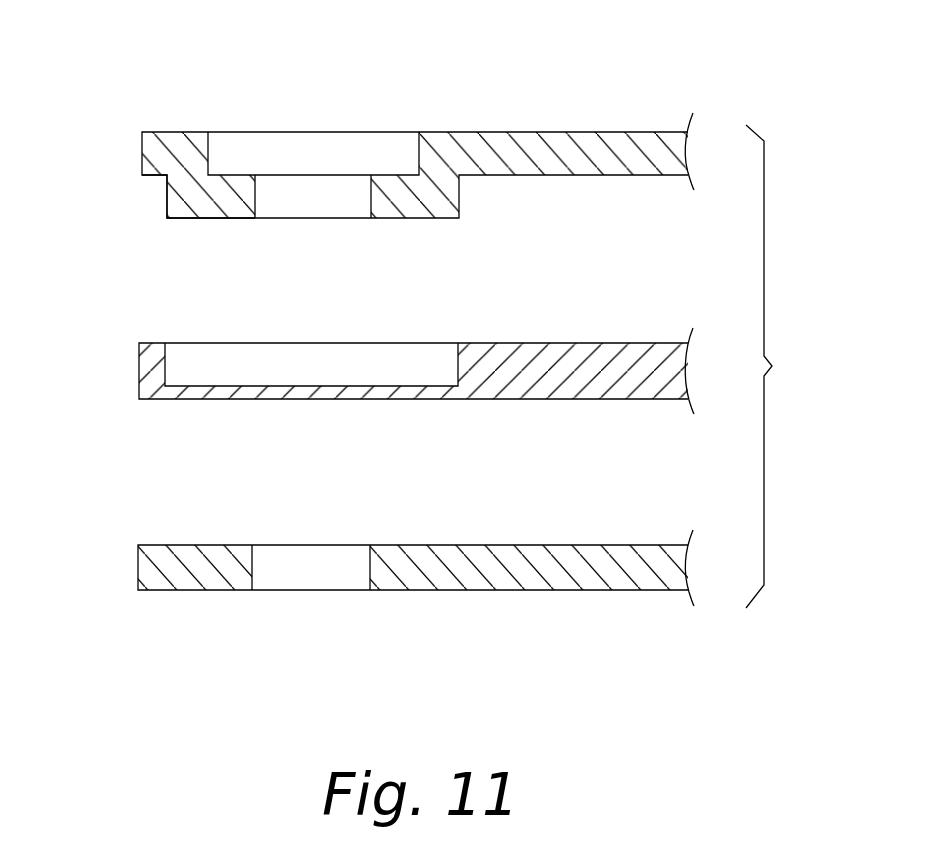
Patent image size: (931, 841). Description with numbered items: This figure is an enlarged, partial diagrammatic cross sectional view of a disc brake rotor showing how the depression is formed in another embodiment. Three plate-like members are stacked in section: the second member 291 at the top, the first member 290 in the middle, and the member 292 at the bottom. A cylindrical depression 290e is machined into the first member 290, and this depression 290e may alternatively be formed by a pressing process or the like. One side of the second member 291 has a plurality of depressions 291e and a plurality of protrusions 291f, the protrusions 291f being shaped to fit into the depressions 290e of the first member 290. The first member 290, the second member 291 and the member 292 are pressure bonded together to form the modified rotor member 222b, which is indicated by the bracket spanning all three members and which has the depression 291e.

The second member 291 is at (500, 132).
The depression 291e is at (208, 143).
The protrusion 291f is at (200, 198).
The first member 290 is at (495, 343).
The depression 290e is at (168, 362).
The member 292 is at (473, 545).
The modified rotor member 222b is at (811, 366).